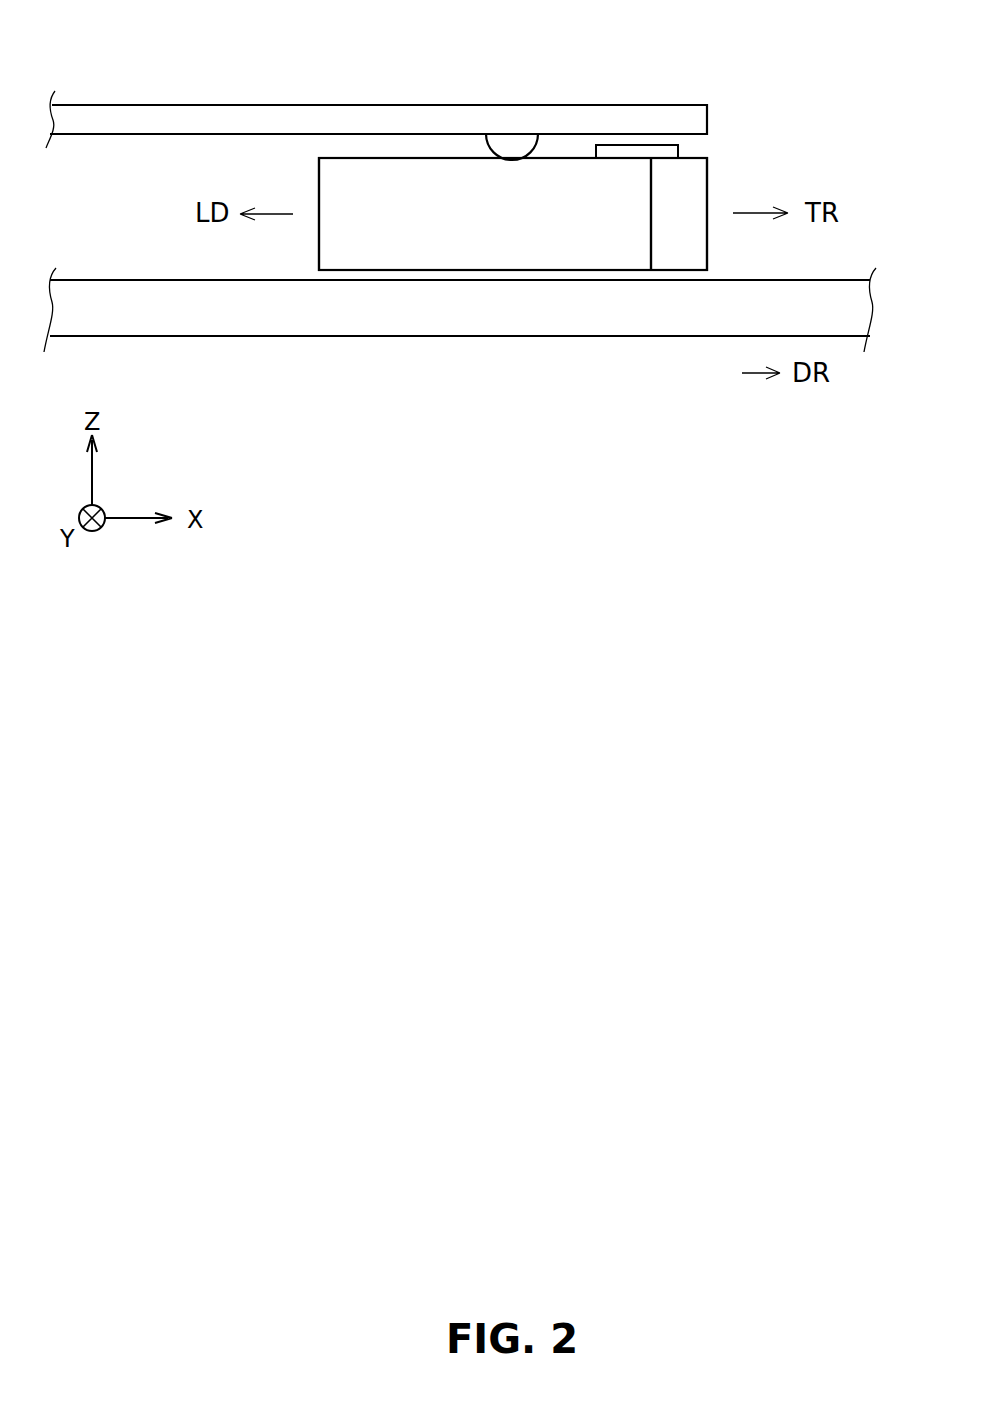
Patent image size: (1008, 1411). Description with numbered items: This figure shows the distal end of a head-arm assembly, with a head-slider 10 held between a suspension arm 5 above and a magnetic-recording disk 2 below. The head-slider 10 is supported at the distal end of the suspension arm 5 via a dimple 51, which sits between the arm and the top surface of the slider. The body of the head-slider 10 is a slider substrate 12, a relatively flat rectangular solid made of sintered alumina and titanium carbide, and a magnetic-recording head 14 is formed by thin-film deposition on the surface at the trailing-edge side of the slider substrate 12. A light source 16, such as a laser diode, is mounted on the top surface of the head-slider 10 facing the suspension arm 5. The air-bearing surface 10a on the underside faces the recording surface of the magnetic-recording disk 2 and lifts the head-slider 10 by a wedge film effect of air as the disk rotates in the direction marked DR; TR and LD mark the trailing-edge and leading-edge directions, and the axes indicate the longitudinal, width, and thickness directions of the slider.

The magnetic-recording disk 2 is at (160, 316).
The suspension arm 5 is at (169, 116).
The head-slider 10 is at (733, 148).
The air-bearing surface (ABS) 10a is at (391, 270).
The slider substrate 12 is at (335, 175).
The magnetic-recording head 14 is at (685, 188).
The light source 16 is at (633, 152).
The dimple 51 is at (500, 146).